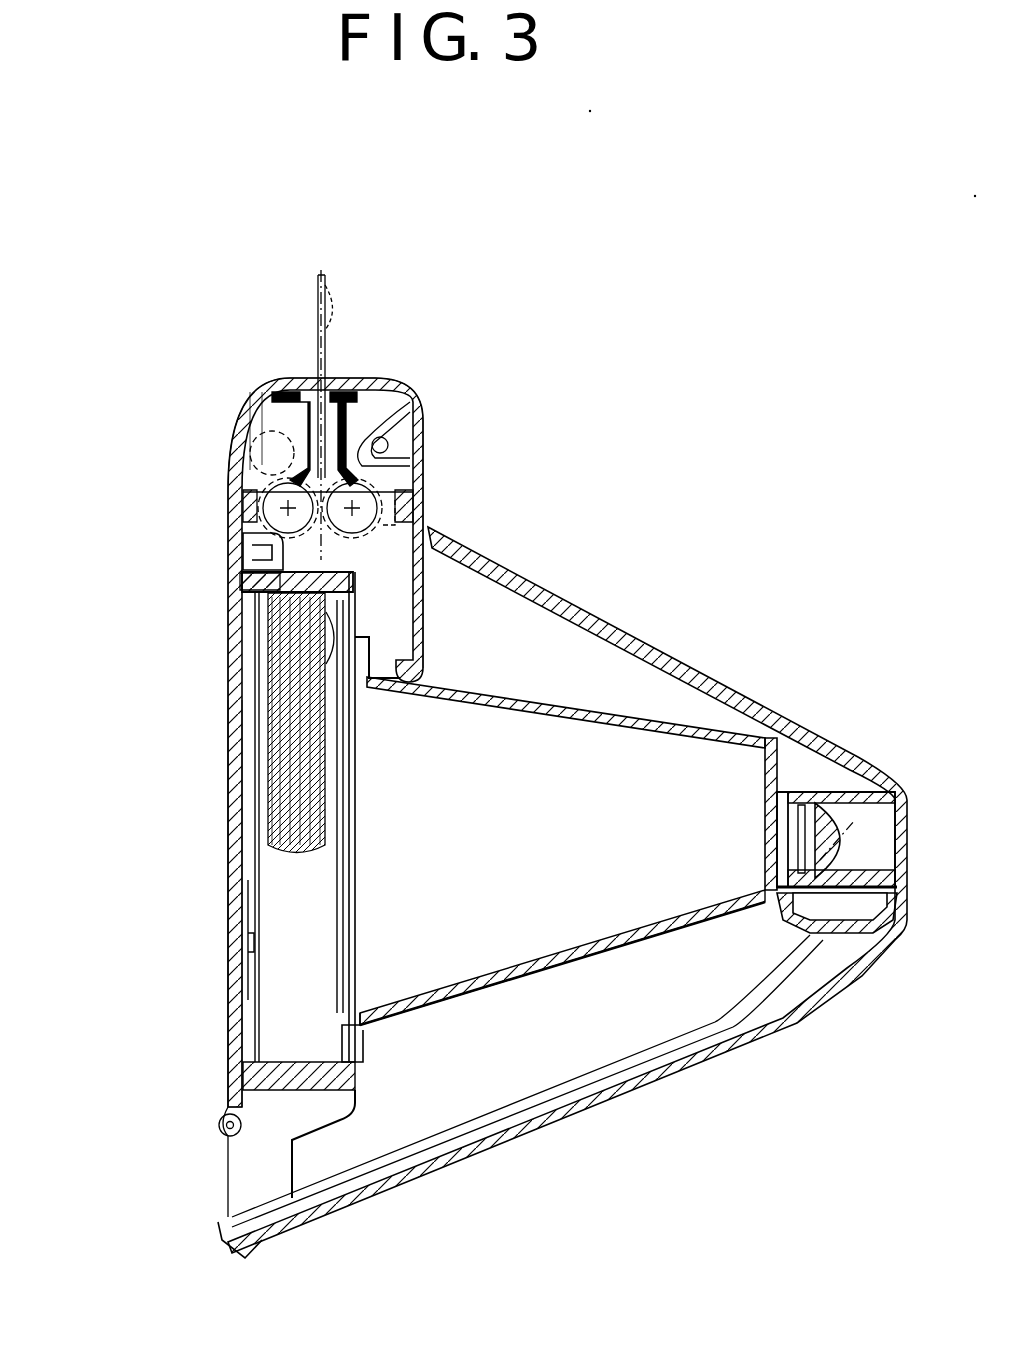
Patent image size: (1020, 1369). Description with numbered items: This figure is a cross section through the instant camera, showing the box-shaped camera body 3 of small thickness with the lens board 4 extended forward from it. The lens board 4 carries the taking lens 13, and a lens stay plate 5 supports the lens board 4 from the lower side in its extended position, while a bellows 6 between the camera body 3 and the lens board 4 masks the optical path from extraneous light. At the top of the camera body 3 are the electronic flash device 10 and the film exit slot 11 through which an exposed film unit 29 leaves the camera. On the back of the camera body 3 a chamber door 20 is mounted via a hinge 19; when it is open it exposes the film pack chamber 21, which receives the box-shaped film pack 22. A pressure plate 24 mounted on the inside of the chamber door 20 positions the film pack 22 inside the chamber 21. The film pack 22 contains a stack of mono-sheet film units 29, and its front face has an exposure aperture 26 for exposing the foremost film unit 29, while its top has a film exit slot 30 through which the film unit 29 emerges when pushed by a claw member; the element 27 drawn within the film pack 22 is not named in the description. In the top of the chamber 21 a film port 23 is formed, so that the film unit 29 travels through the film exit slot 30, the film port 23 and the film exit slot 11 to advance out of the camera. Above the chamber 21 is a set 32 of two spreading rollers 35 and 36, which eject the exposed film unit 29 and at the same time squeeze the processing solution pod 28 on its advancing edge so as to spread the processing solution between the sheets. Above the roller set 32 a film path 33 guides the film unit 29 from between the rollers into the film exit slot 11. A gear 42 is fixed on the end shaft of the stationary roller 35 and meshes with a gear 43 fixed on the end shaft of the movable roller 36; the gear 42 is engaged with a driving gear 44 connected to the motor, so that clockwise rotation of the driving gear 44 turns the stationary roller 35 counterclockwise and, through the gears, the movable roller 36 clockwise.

The camera body 3 is at (283, 380).
The lens board 4 is at (585, 612).
The lens stay plate 5 is at (600, 1108).
The bellows 6 is at (605, 962).
The electronic flash device 10 is at (432, 452).
The film exit slot 11 is at (320, 385).
The taking lens 13 is at (840, 798).
The hinge 19 is at (224, 1132).
The chamber door 20 is at (262, 572).
The film pack chamber 21 is at (248, 620).
The film pack 22 is at (243, 1003).
The film port 23 is at (322, 572).
The pressure plate 24 is at (252, 940).
The exposure aperture 26 is at (350, 820).
The battery 27 is at (330, 925).
The processing solution pod 28 is at (370, 640).
The film unit 29 is at (312, 762).
The film exit slot 30 is at (380, 598).
The set of spreading rollers 32 is at (106, 413).
The film path 33 is at (405, 420).
The stationary roller 35 is at (245, 497).
The movable roller 36 is at (292, 482).
The gear 42 is at (252, 545).
The gear 43 is at (380, 512).
The driving gear 44 is at (282, 440).